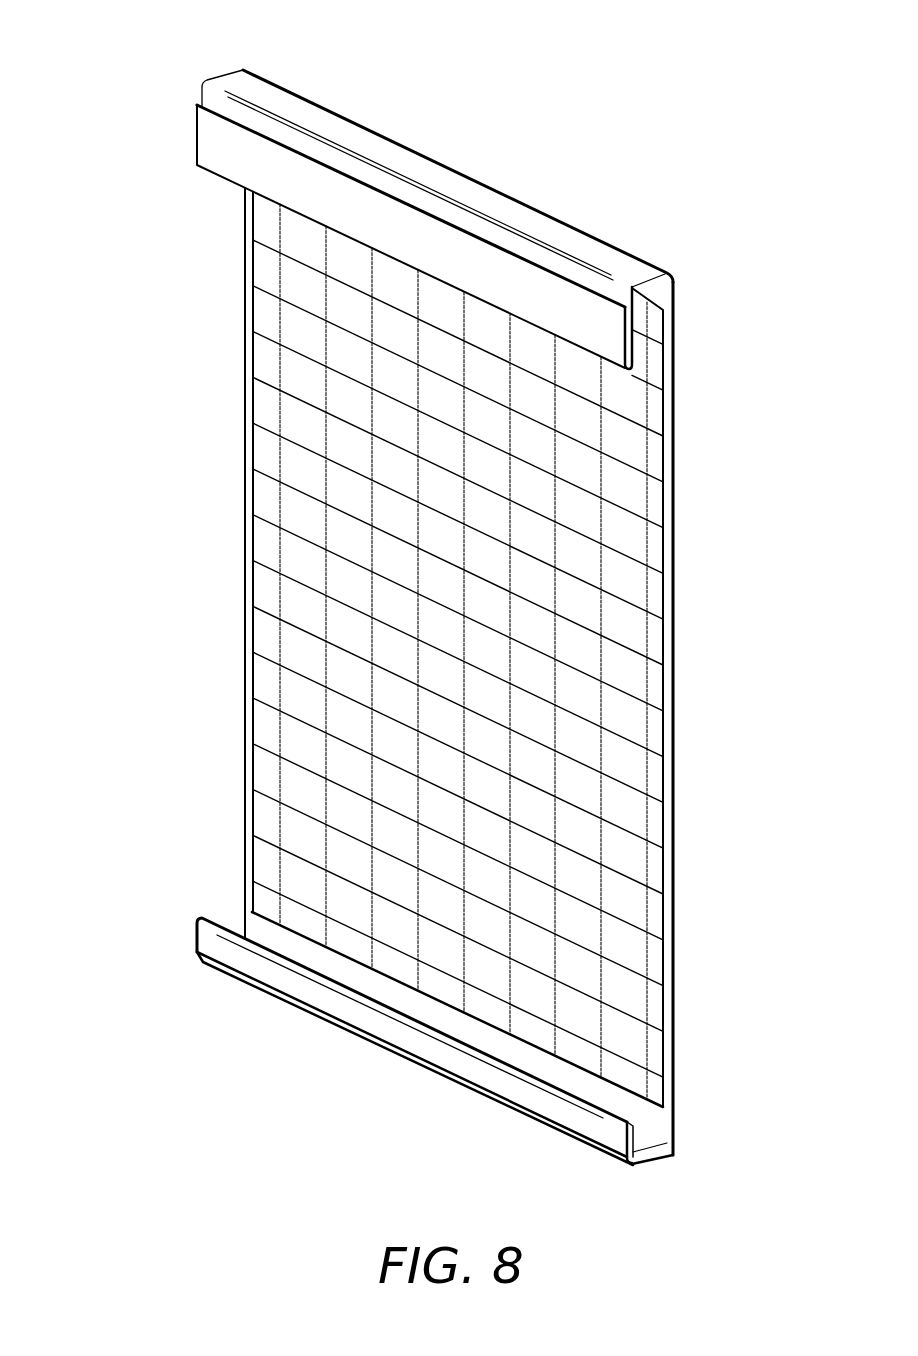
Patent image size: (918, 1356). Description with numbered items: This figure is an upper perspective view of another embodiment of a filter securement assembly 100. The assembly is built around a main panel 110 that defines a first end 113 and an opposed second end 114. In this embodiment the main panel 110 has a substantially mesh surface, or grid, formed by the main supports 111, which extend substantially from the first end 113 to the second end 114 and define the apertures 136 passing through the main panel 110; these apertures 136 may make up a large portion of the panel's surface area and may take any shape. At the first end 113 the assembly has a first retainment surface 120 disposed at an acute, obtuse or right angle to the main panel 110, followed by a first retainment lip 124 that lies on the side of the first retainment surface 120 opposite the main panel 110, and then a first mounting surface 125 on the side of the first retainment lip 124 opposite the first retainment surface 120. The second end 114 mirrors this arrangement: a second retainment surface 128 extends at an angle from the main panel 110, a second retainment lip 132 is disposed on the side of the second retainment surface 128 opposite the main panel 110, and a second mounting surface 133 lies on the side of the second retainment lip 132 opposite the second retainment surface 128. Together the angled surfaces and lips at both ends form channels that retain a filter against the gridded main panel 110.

The filter securement assembly 100 is at (104, 93).
The main panel 110 is at (667, 713).
The main supports 111 is at (370, 537).
The apertures 136 is at (532, 665).
The first end 113 is at (700, 298).
The second end 114 is at (700, 1148).
The first retainment surface 120 is at (647, 278).
The first retainment lip 124 is at (634, 355).
The first mounting surface 125 is at (567, 303).
The second retainment lip 132 is at (645, 1145).
The second mounting surface 133 is at (593, 1125).
The second retainment surface 128 is at (655, 1160).